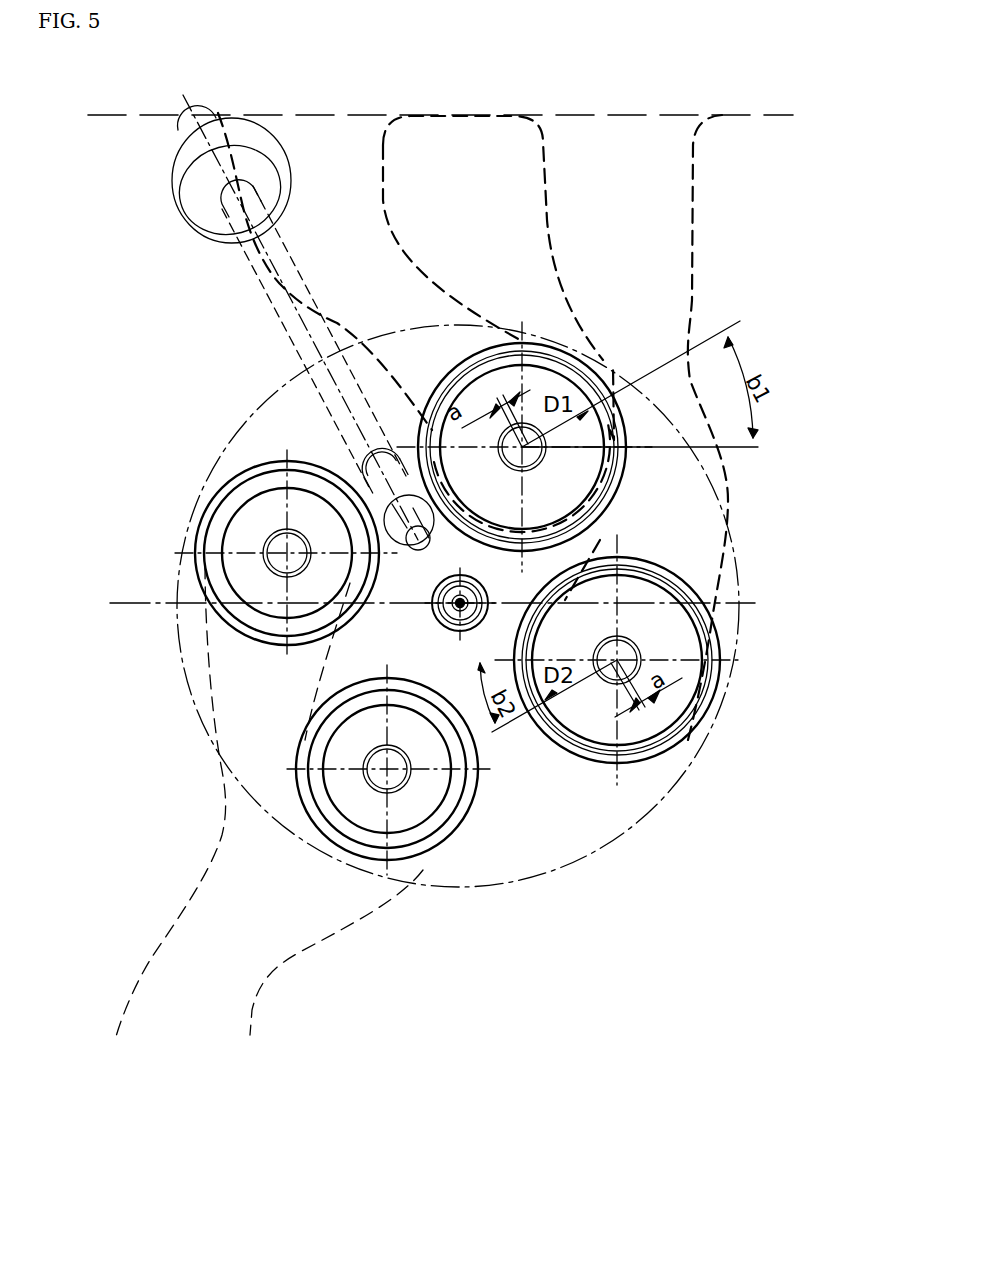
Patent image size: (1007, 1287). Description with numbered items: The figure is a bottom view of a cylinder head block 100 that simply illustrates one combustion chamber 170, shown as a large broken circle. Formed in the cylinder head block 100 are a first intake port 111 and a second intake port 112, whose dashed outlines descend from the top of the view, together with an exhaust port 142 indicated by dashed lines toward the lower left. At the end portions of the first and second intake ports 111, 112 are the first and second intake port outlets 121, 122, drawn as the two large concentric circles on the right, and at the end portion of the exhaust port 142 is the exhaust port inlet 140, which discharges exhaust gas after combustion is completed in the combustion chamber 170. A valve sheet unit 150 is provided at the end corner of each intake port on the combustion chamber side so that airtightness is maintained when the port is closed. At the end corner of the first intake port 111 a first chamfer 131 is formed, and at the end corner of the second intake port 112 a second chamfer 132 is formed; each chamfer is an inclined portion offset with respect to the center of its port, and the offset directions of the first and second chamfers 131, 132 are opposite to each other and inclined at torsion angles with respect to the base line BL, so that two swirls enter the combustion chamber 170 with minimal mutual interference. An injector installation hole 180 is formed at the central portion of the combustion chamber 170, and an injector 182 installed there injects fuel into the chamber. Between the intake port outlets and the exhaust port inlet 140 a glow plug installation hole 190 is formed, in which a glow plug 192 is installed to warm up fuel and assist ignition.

The cylinder head block 100 is at (494, 1007).
The first intake port 111 is at (387, 275).
The second intake port 112 is at (667, 272).
The first intake port outlet 121 is at (490, 387).
The second intake port outlet 122 is at (596, 745).
The first chamfer 131 is at (618, 477).
The second chamfer 132 is at (553, 740).
The exhaust port inlet 140 is at (312, 505).
The exhaust port 142 is at (312, 912).
The valve sheet unit 150 is at (600, 483).
The combustion chamber 170 is at (555, 830).
The injector installation hole 180 is at (430, 595).
The injector 182 is at (455, 612).
The glow plug installation hole 190 is at (405, 546).
The glow plug 192 is at (428, 543).
The base line BL is at (431, 578).